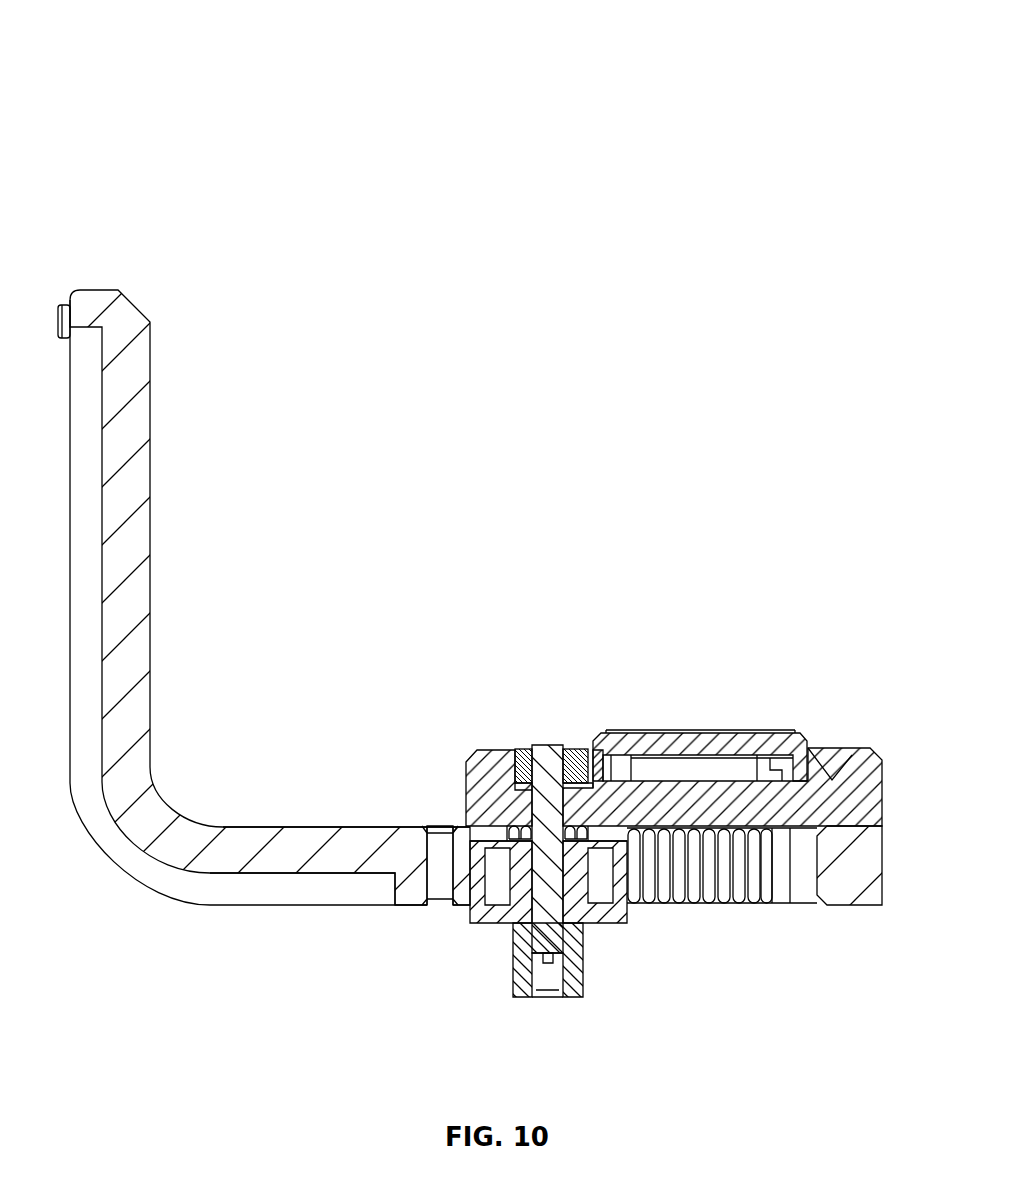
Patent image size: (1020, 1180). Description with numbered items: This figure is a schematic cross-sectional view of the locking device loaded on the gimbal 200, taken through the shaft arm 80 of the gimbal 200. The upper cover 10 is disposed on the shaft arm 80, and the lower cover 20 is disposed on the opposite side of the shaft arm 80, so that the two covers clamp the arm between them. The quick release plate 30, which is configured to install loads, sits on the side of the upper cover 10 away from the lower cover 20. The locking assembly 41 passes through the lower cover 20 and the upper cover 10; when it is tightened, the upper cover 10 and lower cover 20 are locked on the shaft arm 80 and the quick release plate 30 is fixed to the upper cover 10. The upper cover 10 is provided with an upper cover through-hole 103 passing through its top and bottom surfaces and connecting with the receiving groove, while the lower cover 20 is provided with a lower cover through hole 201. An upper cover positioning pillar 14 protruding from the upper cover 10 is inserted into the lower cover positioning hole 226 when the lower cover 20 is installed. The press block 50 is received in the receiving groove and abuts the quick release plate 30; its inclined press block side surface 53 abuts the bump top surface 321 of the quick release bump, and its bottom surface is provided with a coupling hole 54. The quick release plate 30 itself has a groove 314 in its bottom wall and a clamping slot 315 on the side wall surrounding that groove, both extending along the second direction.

The gimbal 200 is at (489, 62).
The upper cover 10 is at (477, 757).
The upper cover positioning pillar 14 is at (475, 848).
The lower cover 20 is at (593, 913).
The quick release plate 30 is at (633, 752).
The locking assembly 41 is at (548, 995).
The press block 50 is at (522, 752).
The press block side surface 53 is at (577, 752).
The coupling hole 54 is at (508, 752).
The shaft arm 80 is at (845, 878).
The upper cover through-hole 103 is at (528, 808).
The lower cover through hole 201 is at (563, 883).
The lower cover positioning hole 226 is at (495, 893).
The groove 314 is at (718, 765).
The clamping slot 315 is at (790, 760).
The bump top surface 321 is at (822, 762).